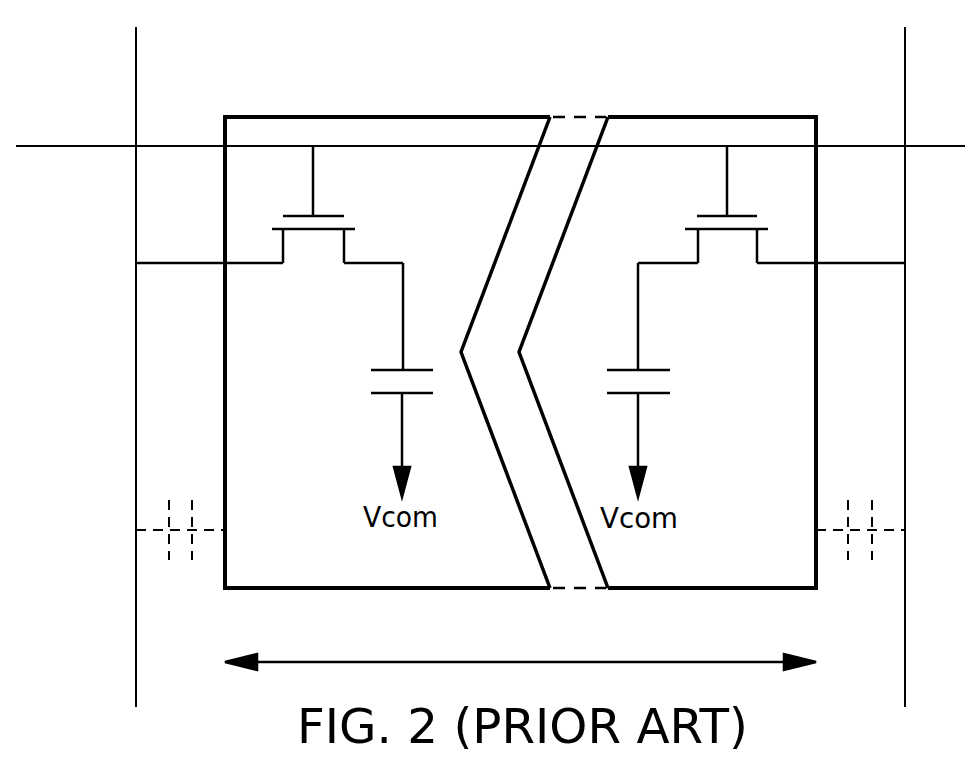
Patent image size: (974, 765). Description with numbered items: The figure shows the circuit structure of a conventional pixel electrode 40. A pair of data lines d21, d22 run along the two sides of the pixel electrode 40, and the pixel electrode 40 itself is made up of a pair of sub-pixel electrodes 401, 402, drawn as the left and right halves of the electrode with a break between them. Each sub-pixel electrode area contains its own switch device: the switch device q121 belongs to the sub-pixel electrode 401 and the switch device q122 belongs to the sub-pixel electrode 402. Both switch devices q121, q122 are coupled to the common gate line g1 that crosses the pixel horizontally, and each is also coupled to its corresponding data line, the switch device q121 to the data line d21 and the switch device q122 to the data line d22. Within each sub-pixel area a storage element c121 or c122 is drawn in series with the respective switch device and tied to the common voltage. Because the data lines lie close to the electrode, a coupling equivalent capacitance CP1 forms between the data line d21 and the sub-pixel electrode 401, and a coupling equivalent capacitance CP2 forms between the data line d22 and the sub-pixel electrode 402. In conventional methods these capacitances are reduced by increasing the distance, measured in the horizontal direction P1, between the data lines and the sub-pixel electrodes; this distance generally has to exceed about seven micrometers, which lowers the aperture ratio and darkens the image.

The pixel electrode 40 is at (578, 117).
The sub-pixel electrode 401 is at (386, 117).
The sub-pixel electrode 402 is at (713, 117).
The gate line g1 is at (490, 126).
The data line d21 is at (162, 367).
The data line d22 is at (877, 367).
The switch device q121 is at (269, 258).
The switch device q122 is at (771, 258).
The first storage capacitor c121 is at (372, 431).
The second storage capacitor c122 is at (671, 432).
The coupling equivalent capacitance CP1 is at (180, 514).
The coupling equivalent capacitance CP2 is at (860, 514).
The direction P1 is at (520, 647).